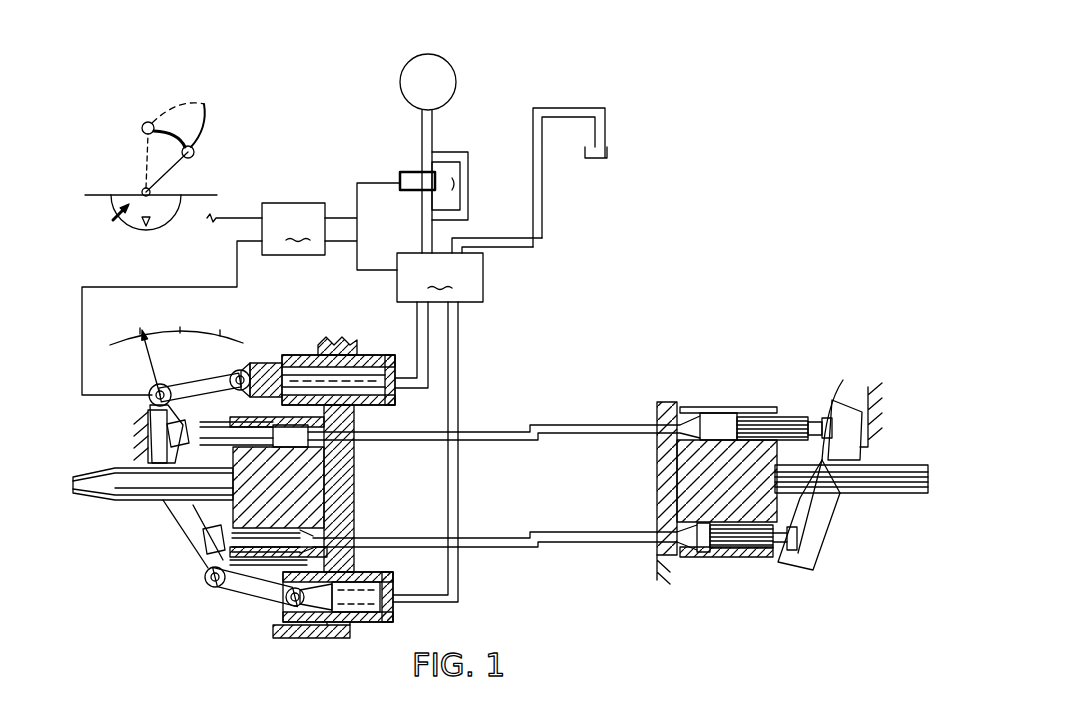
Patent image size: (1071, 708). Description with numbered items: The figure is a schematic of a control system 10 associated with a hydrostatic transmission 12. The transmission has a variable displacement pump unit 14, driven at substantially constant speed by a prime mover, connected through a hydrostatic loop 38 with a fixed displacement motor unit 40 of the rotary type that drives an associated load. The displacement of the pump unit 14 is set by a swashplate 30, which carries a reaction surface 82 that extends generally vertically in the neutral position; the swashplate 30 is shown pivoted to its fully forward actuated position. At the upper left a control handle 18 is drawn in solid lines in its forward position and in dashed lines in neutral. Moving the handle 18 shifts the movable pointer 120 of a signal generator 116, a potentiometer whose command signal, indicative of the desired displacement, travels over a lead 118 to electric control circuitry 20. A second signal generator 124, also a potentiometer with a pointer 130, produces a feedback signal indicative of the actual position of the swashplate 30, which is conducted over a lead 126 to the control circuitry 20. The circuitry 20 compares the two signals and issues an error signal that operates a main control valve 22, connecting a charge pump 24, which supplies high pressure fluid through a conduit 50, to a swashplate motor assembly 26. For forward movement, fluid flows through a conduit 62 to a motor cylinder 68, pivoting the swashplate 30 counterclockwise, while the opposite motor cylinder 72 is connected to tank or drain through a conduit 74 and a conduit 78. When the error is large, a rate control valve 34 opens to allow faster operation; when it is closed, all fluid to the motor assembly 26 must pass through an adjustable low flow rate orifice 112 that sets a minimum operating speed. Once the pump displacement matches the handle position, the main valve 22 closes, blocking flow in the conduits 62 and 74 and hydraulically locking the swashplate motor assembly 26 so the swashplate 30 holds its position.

The control system 10 is at (756, 115).
The hydrostatic transmission 12 is at (650, 344).
The variable displacement pump unit 14 is at (186, 579).
The control handle 18 is at (205, 104).
The electric control circuitry 20 is at (331, 226).
The main control valve 22 is at (440, 277).
The charge pump 24 is at (429, 54).
The swashplate motor assembly 26 is at (318, 629).
The swashplate 30 is at (175, 528).
The rate control valve 34 is at (405, 172).
The hydrostatic loop 38 is at (560, 420).
The fixed displacement motor unit 40 is at (825, 398).
The conduit 50 is at (434, 129).
The conduit 62 is at (414, 362).
The motor cylinder 68 is at (370, 355).
The opposite motor cylinder 72 is at (395, 620).
The conduit 74 is at (459, 492).
The conduit 78 is at (533, 195).
The reaction surface 82 is at (142, 452).
The low flow rate orifice 112 is at (473, 184).
The signal generator 116 is at (122, 232).
The lead 118 is at (241, 218).
The movable pointer 120 is at (123, 190).
The second signal generator 124 is at (138, 364).
The lead 126 is at (237, 280).
The pointer 130 is at (155, 367).